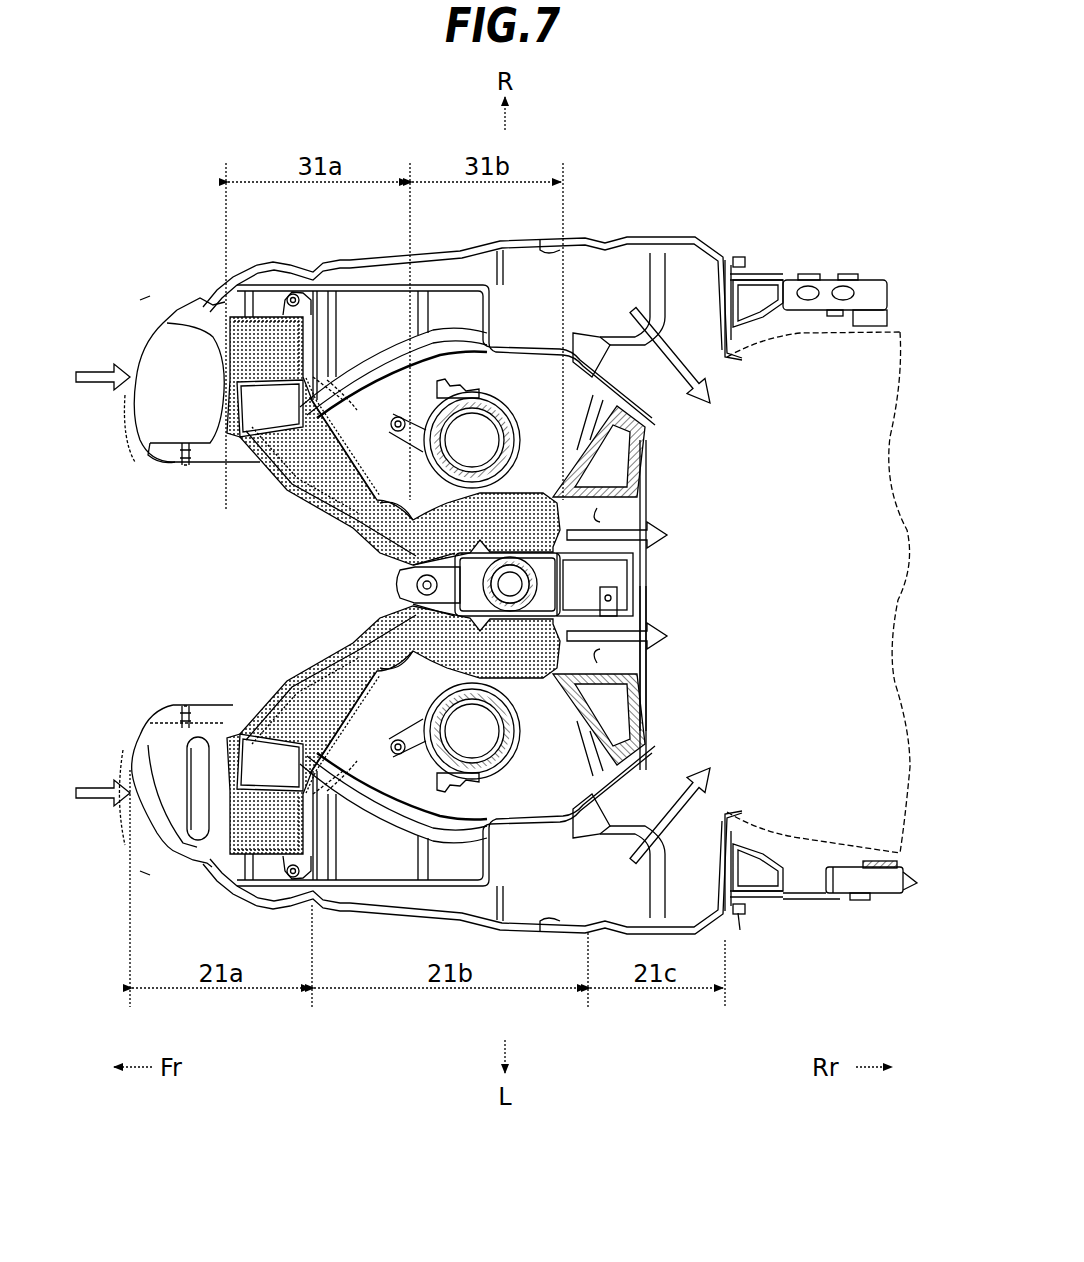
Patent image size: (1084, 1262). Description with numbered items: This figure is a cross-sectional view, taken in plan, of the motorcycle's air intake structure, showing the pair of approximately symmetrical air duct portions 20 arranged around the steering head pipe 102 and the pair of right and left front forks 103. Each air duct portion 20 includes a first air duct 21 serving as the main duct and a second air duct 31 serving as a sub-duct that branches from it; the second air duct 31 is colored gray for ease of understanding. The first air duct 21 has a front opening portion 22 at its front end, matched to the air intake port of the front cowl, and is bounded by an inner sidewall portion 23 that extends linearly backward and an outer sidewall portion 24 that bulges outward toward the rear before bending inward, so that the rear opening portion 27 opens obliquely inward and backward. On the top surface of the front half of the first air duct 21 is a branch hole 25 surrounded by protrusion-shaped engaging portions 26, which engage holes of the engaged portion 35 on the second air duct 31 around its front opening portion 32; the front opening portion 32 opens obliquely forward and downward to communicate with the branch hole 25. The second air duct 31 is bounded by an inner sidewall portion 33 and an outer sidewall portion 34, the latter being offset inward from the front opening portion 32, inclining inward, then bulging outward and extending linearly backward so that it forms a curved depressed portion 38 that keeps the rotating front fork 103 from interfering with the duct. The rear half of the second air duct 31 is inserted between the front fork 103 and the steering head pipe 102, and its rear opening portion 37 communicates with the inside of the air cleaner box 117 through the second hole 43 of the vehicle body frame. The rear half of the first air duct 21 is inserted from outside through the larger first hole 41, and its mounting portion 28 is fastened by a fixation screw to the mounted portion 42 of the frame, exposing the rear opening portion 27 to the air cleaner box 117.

The air duct portion 20 is at (140, 295).
The first air duct 21 is at (205, 290).
The front opening portion 22 is at (140, 470).
The inner sidewall portion 23 is at (188, 470).
The outer sidewall portion 24 is at (345, 260).
The branch hole 25 is at (330, 407).
The engaging portion 26 is at (292, 292).
The rear opening portion 27 is at (660, 430).
The mounting portion 28 is at (740, 930).
The second air duct 31 is at (290, 490).
The front opening portion 32 is at (262, 460).
The inner sidewall portion 33 is at (340, 523).
The outer sidewall portion 34 is at (355, 455).
The engaged portion 35 is at (262, 282).
The rear opening portion 37 is at (556, 480).
The depressed portion 38 is at (410, 523).
The first hole 41 is at (687, 546).
The mounted portion 42 is at (757, 272).
The second hole 43 is at (613, 513).
The steering head pipe 102 is at (392, 583).
The front fork 103 is at (503, 405).
The air cleaner box 117 is at (822, 293).